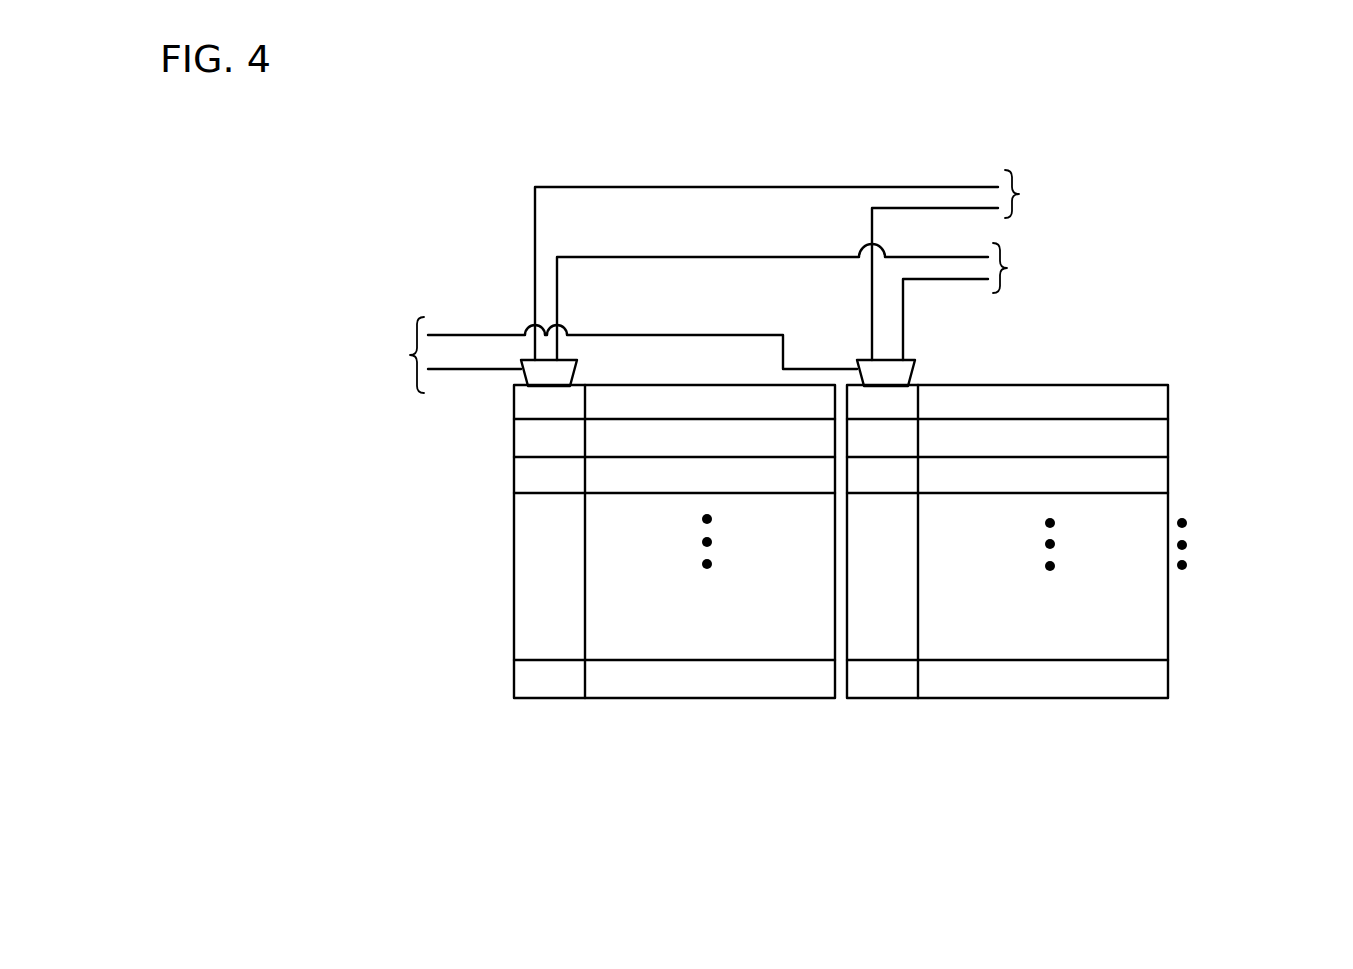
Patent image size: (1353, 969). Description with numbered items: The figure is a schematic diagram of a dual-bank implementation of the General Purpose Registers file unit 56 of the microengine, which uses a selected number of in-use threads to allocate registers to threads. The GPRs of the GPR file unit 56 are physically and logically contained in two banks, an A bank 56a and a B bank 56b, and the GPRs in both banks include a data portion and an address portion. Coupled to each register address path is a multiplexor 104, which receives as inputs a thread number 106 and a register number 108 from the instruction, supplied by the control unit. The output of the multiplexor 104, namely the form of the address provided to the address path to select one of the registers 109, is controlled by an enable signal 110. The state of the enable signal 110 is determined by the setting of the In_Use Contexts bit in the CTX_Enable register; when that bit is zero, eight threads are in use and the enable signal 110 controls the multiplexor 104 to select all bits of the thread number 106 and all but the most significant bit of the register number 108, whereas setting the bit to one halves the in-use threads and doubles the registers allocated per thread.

The GPR file unit 56 is at (228, 270).
The A bank 56a is at (674, 652).
The B bank 56b is at (1063, 650).
The multiplexor 104 is at (577, 362).
The thread number 106 is at (907, 208).
The register number 108 is at (946, 258).
The registers 109 is at (1165, 677).
The enable signal 110 is at (453, 369).